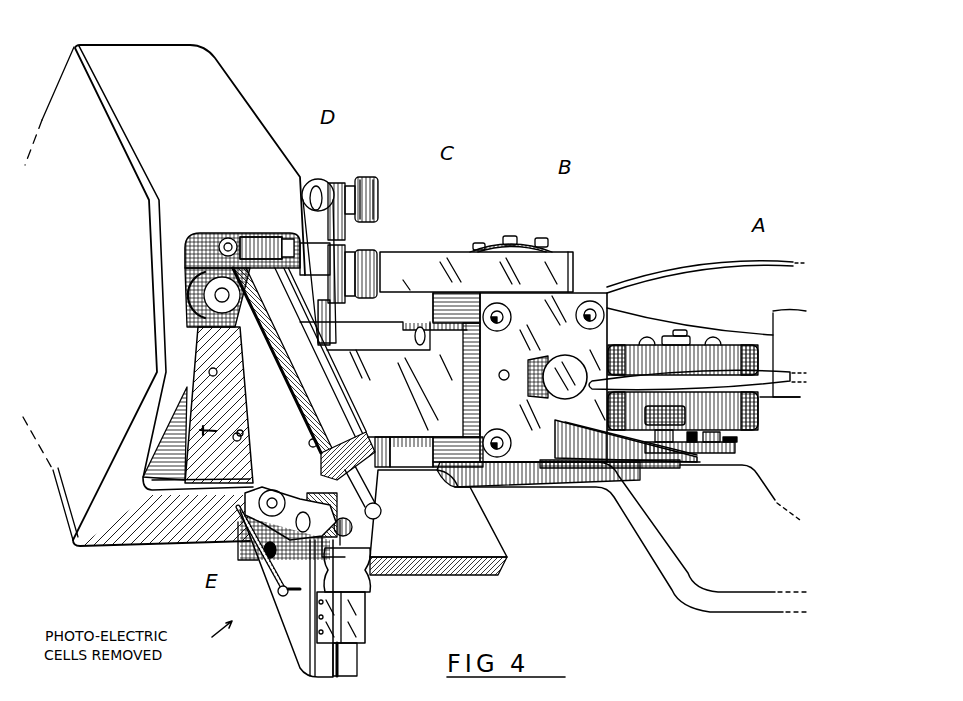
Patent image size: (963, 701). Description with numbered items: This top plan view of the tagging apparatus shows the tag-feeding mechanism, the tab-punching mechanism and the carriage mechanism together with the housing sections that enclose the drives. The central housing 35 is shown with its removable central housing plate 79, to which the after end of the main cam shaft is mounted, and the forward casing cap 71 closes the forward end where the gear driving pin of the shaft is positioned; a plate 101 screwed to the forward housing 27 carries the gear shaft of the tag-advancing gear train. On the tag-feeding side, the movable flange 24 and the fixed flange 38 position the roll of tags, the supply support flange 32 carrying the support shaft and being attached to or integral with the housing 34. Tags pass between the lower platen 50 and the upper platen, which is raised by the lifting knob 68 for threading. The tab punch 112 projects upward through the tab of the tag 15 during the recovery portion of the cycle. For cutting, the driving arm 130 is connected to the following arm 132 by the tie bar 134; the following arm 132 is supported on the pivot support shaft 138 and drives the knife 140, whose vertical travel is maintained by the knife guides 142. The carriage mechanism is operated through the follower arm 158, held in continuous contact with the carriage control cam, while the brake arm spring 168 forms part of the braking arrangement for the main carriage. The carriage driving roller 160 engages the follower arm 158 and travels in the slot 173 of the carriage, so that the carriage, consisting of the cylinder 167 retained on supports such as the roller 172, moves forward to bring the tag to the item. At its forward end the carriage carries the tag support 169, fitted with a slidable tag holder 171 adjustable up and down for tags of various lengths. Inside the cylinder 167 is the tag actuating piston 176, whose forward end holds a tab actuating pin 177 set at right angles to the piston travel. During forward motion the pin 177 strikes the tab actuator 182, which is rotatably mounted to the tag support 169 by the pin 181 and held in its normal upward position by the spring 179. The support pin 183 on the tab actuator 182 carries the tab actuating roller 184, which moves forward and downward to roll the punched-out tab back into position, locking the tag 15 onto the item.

The central housing plate 79 is at (62, 93).
The central housing 35 is at (220, 116).
The roller 172 is at (240, 237).
The slot 173 is at (227, 314).
The carriage driving roller 160 is at (317, 253).
The follower arm 158 is at (198, 405).
The brake arm spring 168 is at (197, 392).
The cylinder 167 is at (318, 393).
The tie bar 134 is at (307, 184).
The following arm 132 is at (340, 182).
The driving arm 130 is at (378, 192).
The pivot support shaft 138 is at (365, 255).
The knife guides 142 is at (362, 262).
The knife 140 is at (332, 330).
The tab punch 112 is at (422, 328).
The plate 101 is at (527, 244).
The forward housing 27 is at (541, 279).
The forward casing cap 71 is at (573, 279).
The housing 34 is at (530, 447).
The lower platen 50 is at (518, 380).
The lifting knob 68 is at (560, 372).
The fixed flange 38 is at (705, 266).
The movable flange 24 is at (773, 388).
The supply support flange 32 is at (697, 548).
The tag actuating piston 176 is at (357, 486).
The tab actuating pin 177 is at (381, 509).
The tab actuating roller 184 is at (353, 528).
The support pin 183 is at (345, 557).
The pin 181 is at (212, 534).
The tab actuator 182 is at (293, 536).
The spring 179 is at (262, 570).
The tag support 169 is at (300, 620).
The tag 15 is at (355, 583).
The slidable tag holder 171 is at (352, 626).